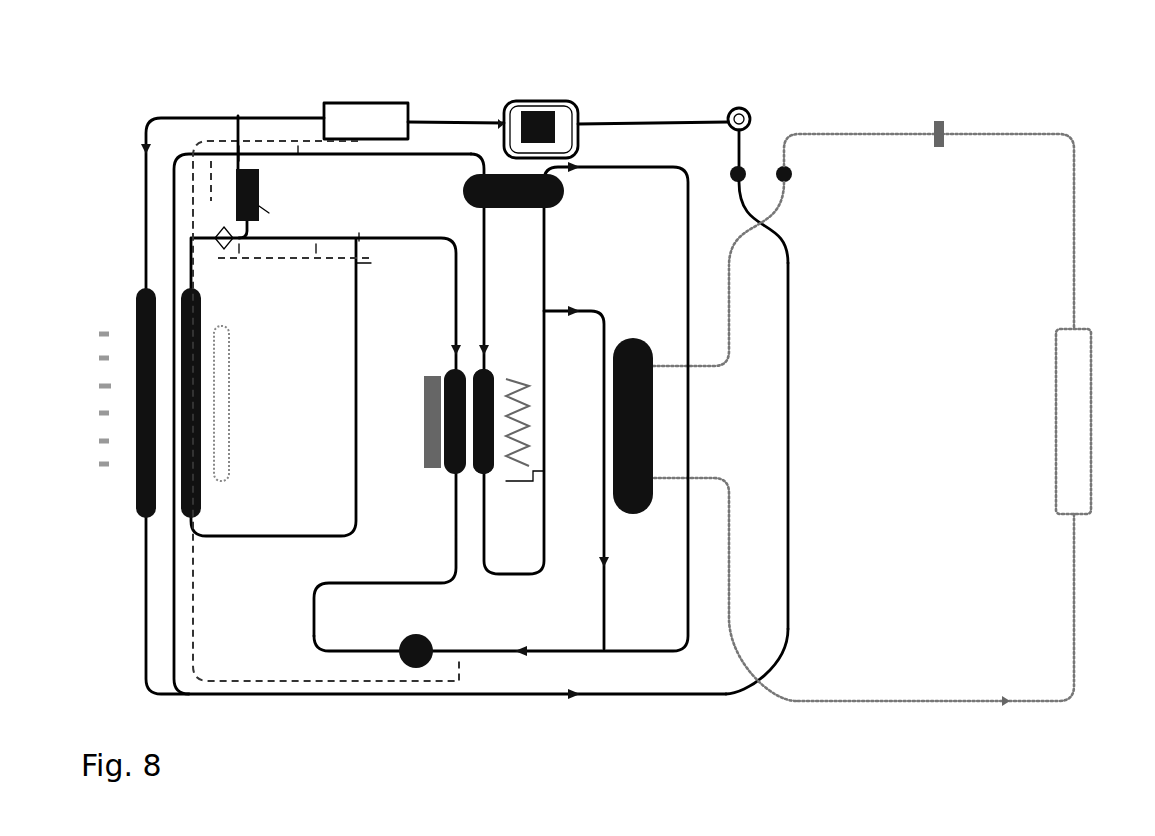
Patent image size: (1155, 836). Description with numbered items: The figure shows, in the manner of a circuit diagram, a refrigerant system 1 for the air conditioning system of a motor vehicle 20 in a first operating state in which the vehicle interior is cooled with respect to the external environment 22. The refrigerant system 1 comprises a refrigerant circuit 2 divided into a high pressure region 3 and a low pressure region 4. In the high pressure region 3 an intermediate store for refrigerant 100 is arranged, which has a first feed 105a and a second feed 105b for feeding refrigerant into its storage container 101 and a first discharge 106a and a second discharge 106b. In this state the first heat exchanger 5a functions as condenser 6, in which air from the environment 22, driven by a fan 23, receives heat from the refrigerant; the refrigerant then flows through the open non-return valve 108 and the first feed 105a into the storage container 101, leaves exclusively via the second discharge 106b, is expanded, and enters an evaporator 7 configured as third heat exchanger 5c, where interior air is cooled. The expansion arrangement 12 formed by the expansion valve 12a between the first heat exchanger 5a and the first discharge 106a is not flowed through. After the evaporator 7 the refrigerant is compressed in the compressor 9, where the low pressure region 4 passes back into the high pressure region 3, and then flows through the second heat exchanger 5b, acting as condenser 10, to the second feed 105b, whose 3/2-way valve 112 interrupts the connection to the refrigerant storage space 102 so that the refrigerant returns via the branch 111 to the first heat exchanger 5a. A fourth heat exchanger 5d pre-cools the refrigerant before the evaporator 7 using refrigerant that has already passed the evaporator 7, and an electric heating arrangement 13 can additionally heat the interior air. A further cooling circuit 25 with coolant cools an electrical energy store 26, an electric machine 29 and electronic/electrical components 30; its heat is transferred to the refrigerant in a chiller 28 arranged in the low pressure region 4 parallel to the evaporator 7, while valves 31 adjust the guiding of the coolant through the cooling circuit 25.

The refrigerant system 1 is at (614, 143).
The refrigerant circuit 2 is at (400, 354).
The high pressure region 3 is at (442, 150).
The low pressure region 4 is at (648, 160).
The first heat exchanger 5a is at (186, 420).
The second heat exchanger 5b is at (455, 451).
The third heat exchanger 5c is at (496, 474).
The fourth heat exchanger 5d is at (580, 188).
The condenser 6 is at (206, 490).
The evaporator 7 is at (464, 451).
The compressor 9 is at (418, 632).
The condenser 10 is at (452, 478).
The expansion arrangement 12 is at (286, 369).
The expansion valve 12a is at (183, 118).
The electric heating arrangement 13 is at (430, 408).
The motor vehicle 20 is at (898, 357).
The external environment 22 is at (122, 404).
The fan 23 is at (228, 398).
The cooling circuit 25 is at (606, 384).
The electrical energy store 26 is at (1082, 450).
The chiller 28 is at (634, 328).
The electric machine 29 is at (540, 92).
The electronic/electrical components 30 is at (382, 100).
The valves 31 is at (772, 232).
The intermediate store for refrigerant 100 is at (210, 146).
The storage container 101 is at (264, 190).
The refrigerant storage space 102 is at (278, 216).
The first feed 105a is at (238, 252).
The second feed 105b is at (315, 248).
The first discharge 106a is at (238, 133).
The second discharge 106b is at (298, 133).
The non-return valve 108 is at (214, 235).
The branch 111 is at (379, 274).
The 3/2-way valve 112 is at (358, 230).